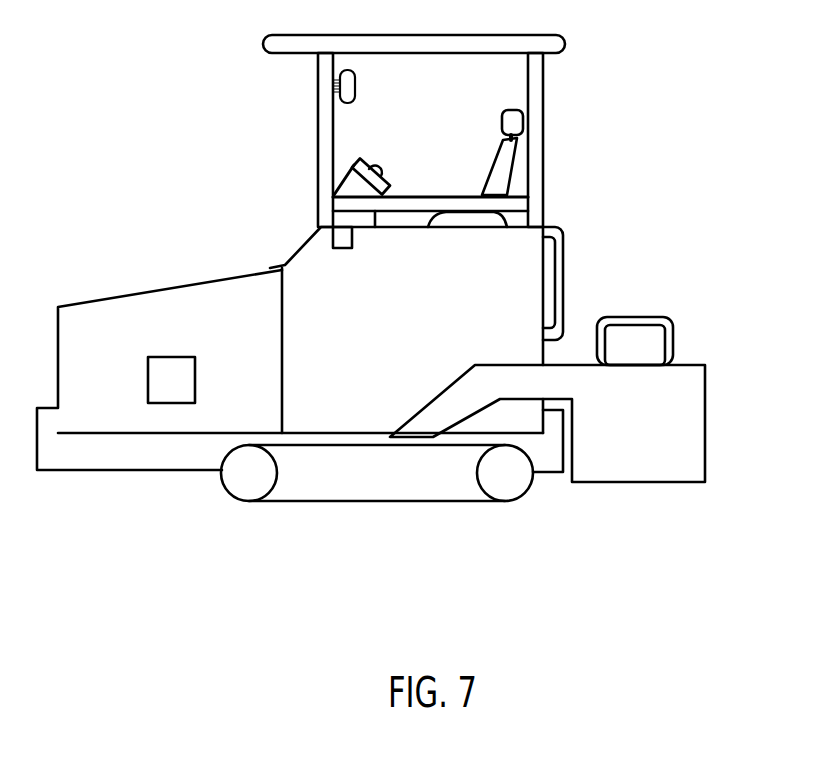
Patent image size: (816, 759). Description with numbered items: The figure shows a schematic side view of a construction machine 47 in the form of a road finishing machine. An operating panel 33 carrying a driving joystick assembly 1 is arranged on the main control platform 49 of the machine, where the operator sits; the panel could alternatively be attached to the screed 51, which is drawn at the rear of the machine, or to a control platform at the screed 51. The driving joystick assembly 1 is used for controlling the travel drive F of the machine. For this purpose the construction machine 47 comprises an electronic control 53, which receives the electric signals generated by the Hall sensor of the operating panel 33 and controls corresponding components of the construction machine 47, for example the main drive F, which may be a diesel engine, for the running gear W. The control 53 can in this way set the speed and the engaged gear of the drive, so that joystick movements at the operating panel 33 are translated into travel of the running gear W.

The construction machine 47 is at (183, 173).
The main control platform 49 is at (485, 109).
The operating panel 33 is at (366, 160).
The driving joystick assembly 1 is at (380, 168).
The electronic control 53 is at (354, 243).
The screed 51 is at (707, 376).
The running gear W is at (247, 452).
The travel drive F is at (177, 392).